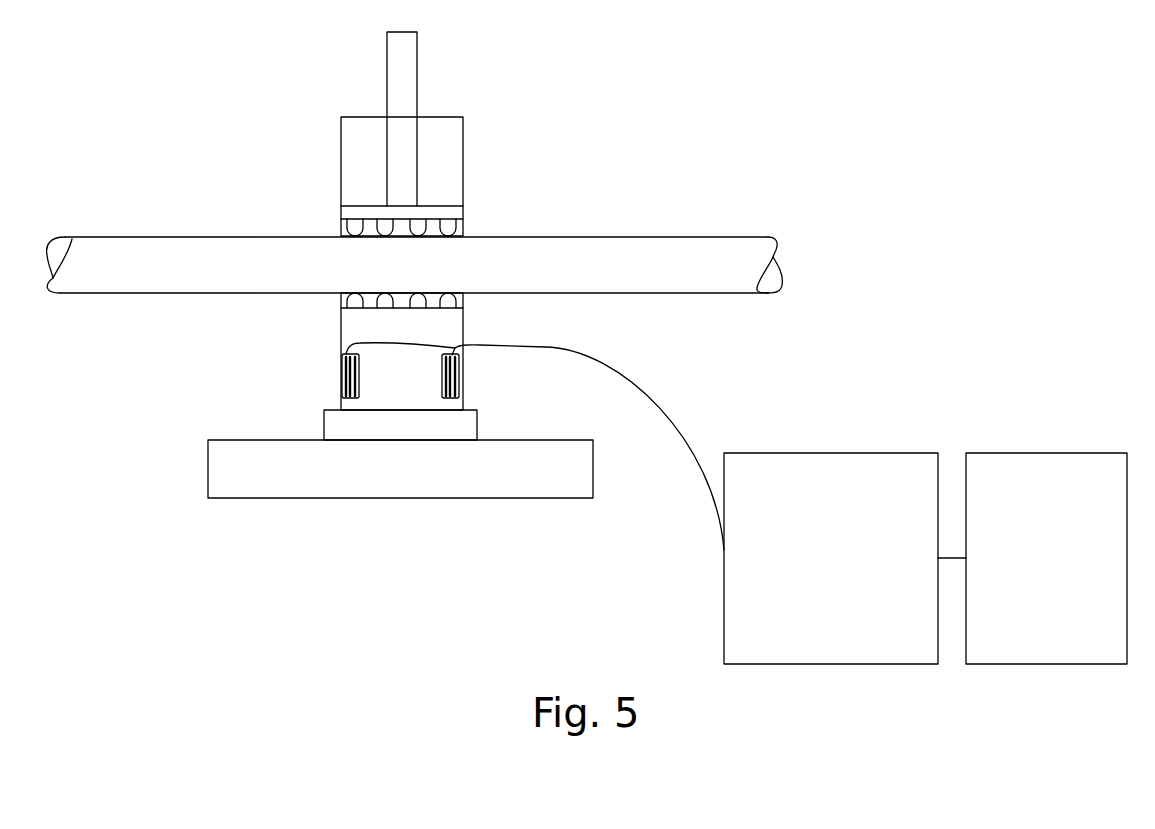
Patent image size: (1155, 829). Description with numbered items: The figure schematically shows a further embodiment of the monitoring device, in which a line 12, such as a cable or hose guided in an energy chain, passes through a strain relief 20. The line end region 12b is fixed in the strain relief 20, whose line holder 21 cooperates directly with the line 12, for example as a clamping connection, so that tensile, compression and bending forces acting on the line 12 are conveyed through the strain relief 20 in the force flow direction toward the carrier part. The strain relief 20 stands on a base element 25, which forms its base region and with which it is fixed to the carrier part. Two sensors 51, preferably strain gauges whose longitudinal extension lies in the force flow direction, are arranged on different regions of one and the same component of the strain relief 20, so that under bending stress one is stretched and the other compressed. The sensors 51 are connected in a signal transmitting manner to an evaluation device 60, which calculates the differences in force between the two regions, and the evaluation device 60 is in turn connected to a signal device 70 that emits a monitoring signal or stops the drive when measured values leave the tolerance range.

The line 12 is at (90, 255).
The line end region 12b is at (352, 272).
The strain relief 20 is at (484, 140).
The line holder 21 is at (453, 213).
The base element 25 is at (217, 470).
The sensor 51 is at (342, 378).
The evaluation device 60 is at (831, 558).
The signal device 70 is at (1046, 558).